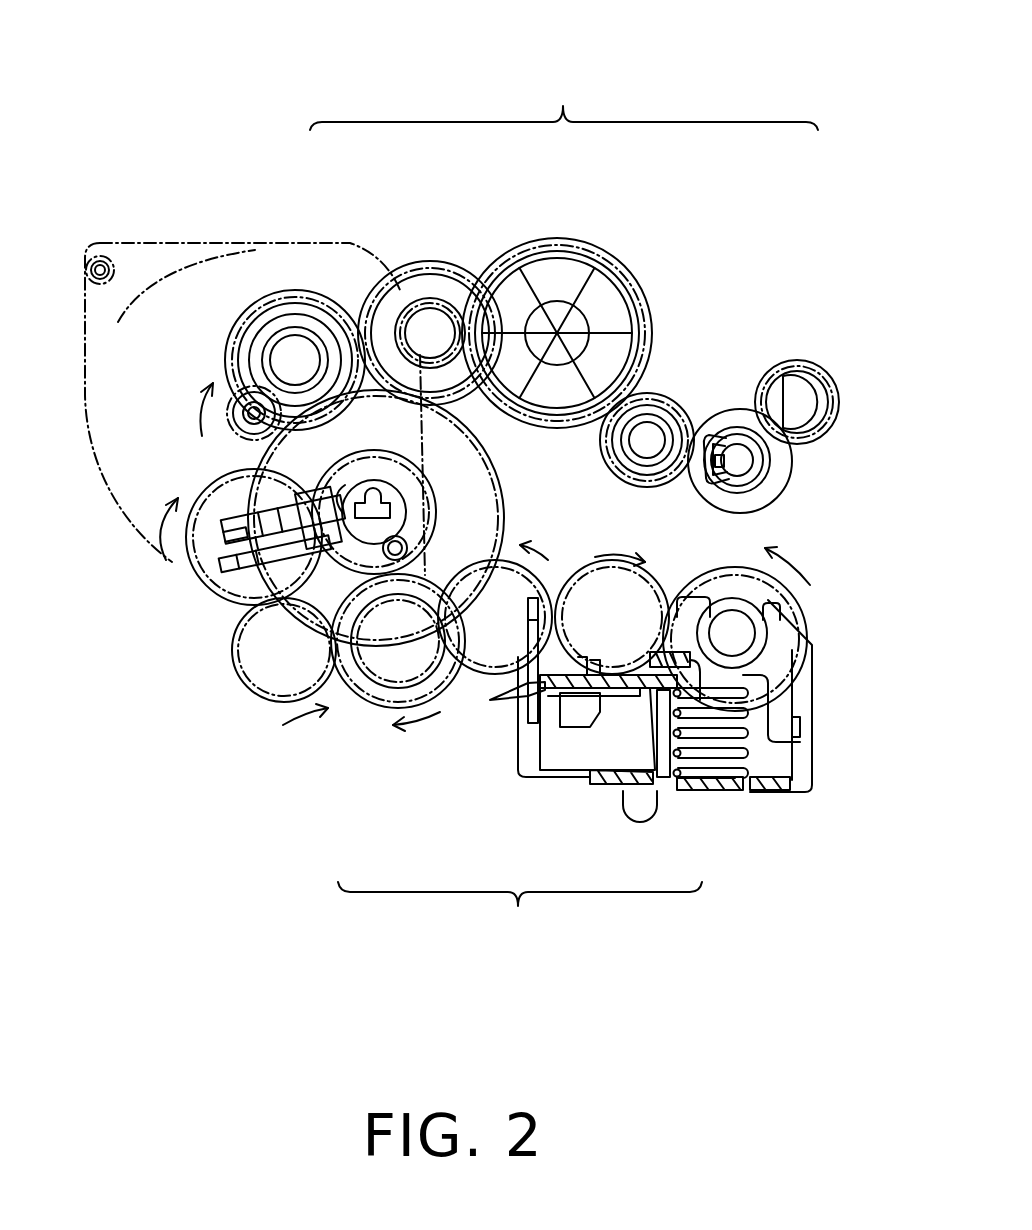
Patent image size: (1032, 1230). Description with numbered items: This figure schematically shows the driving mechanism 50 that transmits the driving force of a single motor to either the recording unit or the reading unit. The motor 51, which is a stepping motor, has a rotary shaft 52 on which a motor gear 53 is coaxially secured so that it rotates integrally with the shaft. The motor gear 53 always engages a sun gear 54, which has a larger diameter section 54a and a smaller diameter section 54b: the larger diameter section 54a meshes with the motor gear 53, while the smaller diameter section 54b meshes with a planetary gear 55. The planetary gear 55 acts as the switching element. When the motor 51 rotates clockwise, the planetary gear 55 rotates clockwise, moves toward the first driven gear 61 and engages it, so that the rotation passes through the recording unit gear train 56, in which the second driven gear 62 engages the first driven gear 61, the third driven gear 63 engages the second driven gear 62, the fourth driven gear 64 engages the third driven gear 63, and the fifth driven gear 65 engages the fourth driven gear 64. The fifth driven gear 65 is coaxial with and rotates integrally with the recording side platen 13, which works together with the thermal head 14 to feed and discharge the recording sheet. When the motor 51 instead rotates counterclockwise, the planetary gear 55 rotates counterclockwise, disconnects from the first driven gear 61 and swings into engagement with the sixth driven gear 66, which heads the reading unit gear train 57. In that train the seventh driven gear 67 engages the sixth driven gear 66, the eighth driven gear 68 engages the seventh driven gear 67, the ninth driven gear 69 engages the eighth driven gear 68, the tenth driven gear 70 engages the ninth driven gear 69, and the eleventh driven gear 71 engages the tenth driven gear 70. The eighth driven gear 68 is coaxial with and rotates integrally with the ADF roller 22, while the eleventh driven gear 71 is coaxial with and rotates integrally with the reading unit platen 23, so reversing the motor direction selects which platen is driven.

The driving mechanism 50 is at (848, 60).
The motor 51 is at (130, 318).
The rotary shaft 52 is at (220, 396).
The motor gear 53 is at (235, 428).
The sun gear 54 is at (133, 600).
The larger diameter section 54a is at (190, 597).
The smaller diameter section 54b is at (355, 546).
The planetary gear 55 is at (203, 487).
The recording unit gear train 56 is at (520, 912).
The reading unit gear train 57 is at (564, 101).
The first driven gear 61 is at (264, 707).
The second driven gear 62 is at (372, 708).
The third driven gear 63 is at (466, 692).
The fourth driven gear 64 is at (523, 670).
The fifth driven gear 65 is at (730, 790).
The sixth driven gear 66 is at (302, 292).
The seventh driven gear 67 is at (428, 262).
The eighth driven gear 68 is at (557, 281).
The ADF roller 22 is at (580, 238).
The ninth driven gear 69 is at (660, 393).
The tenth driven gear 70 is at (739, 409).
The eleventh driven gear 71 is at (810, 289).
The reading unit platen 23 is at (824, 378).
The recording side platen 13 is at (758, 640).
The thermal head 14 is at (782, 796).